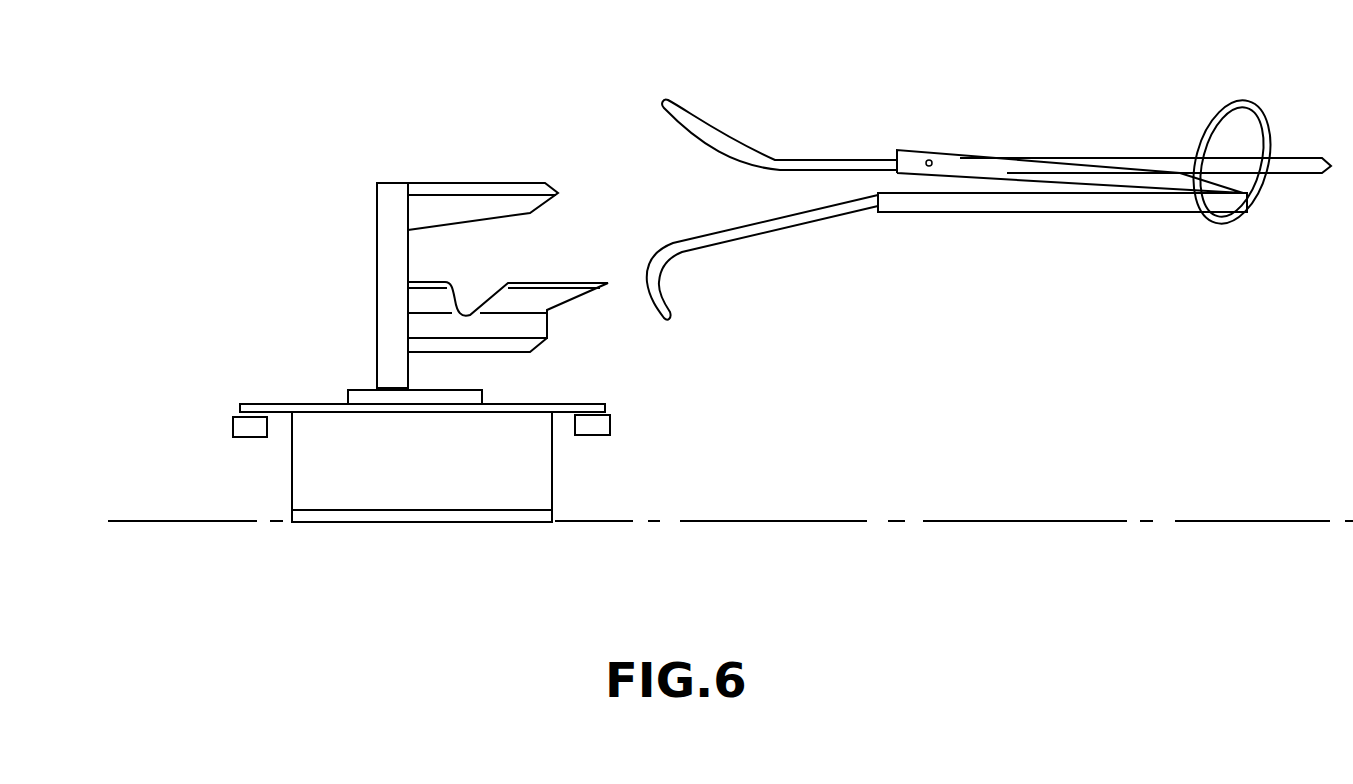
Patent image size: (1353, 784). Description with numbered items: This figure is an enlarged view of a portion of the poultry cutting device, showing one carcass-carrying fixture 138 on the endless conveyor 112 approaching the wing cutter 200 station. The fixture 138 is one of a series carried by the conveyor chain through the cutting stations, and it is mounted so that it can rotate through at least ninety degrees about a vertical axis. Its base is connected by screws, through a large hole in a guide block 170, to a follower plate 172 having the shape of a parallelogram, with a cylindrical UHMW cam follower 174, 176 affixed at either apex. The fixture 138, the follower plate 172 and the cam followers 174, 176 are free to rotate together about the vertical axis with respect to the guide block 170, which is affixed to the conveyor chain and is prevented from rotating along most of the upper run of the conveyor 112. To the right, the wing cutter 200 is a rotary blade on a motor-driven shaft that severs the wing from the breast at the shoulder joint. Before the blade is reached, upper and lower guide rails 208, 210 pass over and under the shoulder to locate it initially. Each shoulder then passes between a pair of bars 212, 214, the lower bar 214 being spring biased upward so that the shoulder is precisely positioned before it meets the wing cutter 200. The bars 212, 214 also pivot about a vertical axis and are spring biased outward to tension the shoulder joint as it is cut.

The endless conveyor 112 is at (985, 522).
The fixture 138 is at (368, 288).
The guide block 170 is at (440, 475).
The follower plate 172 is at (306, 404).
The cam follower 174 is at (233, 427).
The cam follower 176 is at (610, 424).
The wing cutter 200 is at (1248, 100).
The upper guide rail 208 is at (808, 160).
The lower guide rail 210 is at (716, 243).
The upper bar 212 is at (1035, 160).
The lower bar 214 is at (1062, 212).